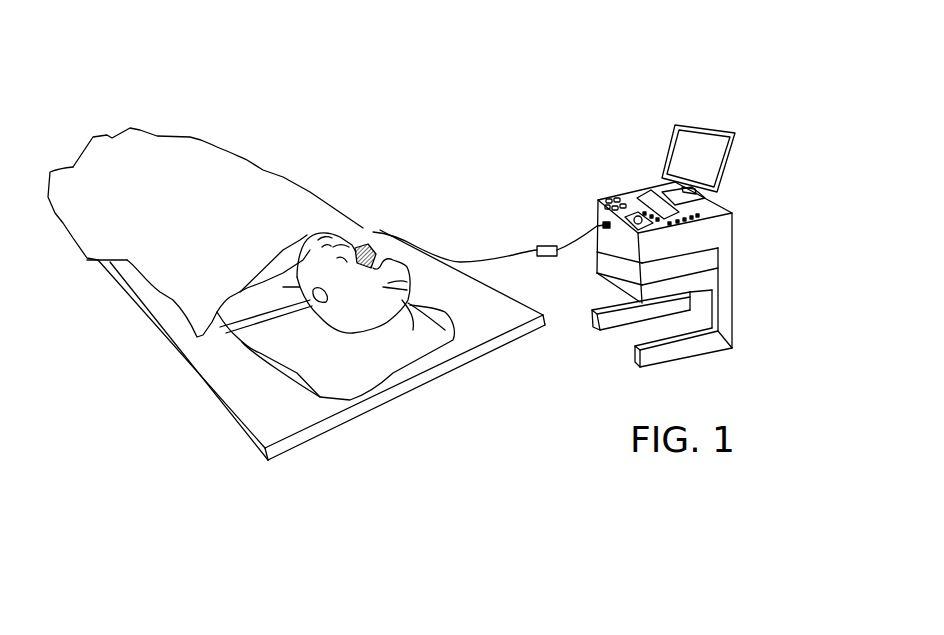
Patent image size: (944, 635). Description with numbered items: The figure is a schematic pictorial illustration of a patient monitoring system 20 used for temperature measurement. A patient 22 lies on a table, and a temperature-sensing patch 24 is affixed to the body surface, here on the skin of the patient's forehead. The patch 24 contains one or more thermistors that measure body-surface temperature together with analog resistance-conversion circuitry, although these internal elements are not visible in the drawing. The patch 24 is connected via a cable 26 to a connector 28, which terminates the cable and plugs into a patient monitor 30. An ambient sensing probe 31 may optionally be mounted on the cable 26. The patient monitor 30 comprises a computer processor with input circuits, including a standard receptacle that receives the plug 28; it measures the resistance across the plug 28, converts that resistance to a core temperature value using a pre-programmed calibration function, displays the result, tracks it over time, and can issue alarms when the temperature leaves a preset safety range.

The patient monitoring system 20 is at (769, 45).
The patient 22 is at (270, 278).
The temperature-sensing patch 24 is at (363, 245).
The cable 26 is at (497, 258).
The connector 28 is at (605, 224).
The patient monitor 30 is at (732, 238).
The ambient sensing probe 31 is at (547, 258).